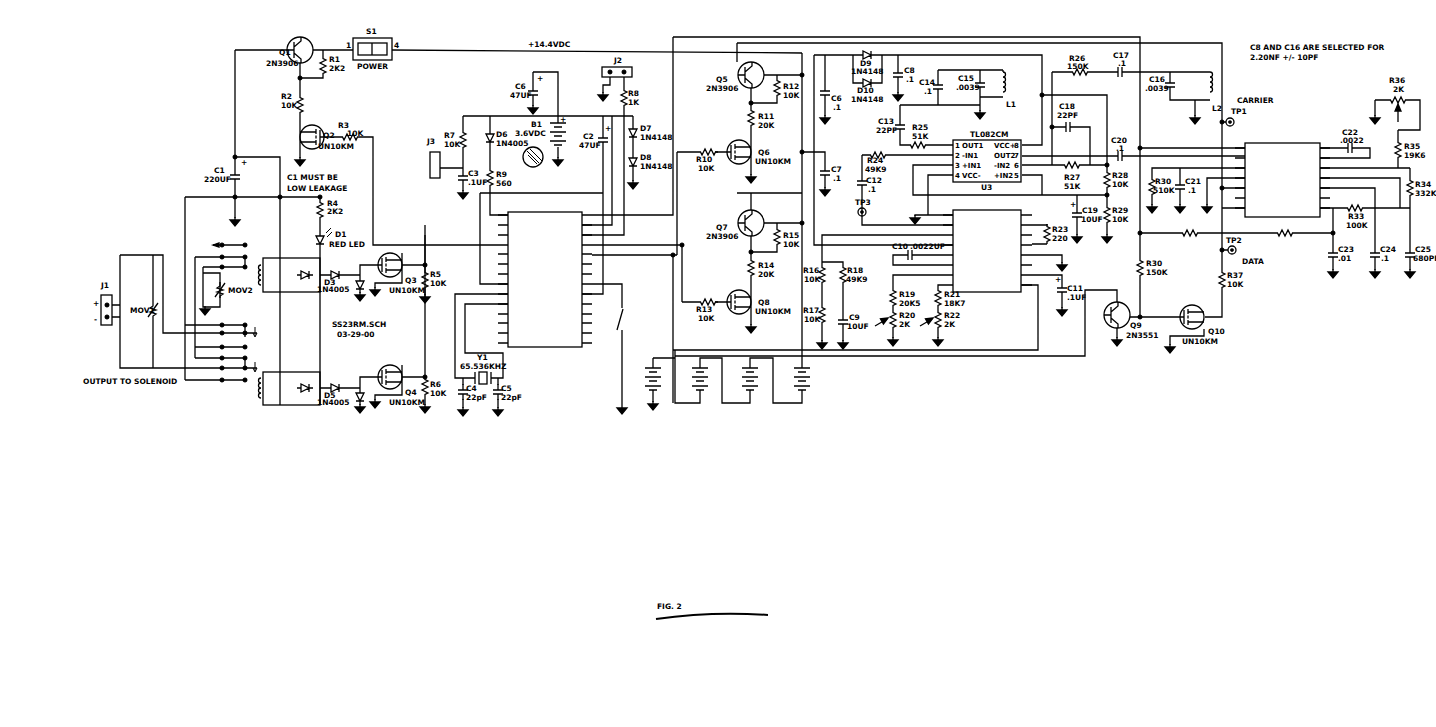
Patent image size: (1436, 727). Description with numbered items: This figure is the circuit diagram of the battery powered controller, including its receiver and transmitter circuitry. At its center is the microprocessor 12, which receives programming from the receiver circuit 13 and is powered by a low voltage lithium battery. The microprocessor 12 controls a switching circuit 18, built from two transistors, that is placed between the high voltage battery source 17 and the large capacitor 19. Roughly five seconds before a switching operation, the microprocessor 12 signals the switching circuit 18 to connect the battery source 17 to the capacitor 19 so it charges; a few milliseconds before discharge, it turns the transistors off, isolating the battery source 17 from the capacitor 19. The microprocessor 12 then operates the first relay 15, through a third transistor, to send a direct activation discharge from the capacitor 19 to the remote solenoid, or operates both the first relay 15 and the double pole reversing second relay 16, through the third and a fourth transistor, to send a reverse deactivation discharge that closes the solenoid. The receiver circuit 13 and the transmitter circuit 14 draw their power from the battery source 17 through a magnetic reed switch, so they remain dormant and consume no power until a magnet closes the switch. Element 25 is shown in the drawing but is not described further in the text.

The microprocessor 12 is at (563, 356).
The receiver circuit 13 is at (1011, 298).
The transmitter circuit 14 is at (1313, 250).
The first relay 15 is at (258, 255).
The second relay 16 is at (276, 400).
The high voltage battery source 17 is at (722, 395).
The switching circuit 18 is at (303, 132).
The large capacitor 19 is at (248, 177).
The magnetic switch S2 25 is at (632, 347).